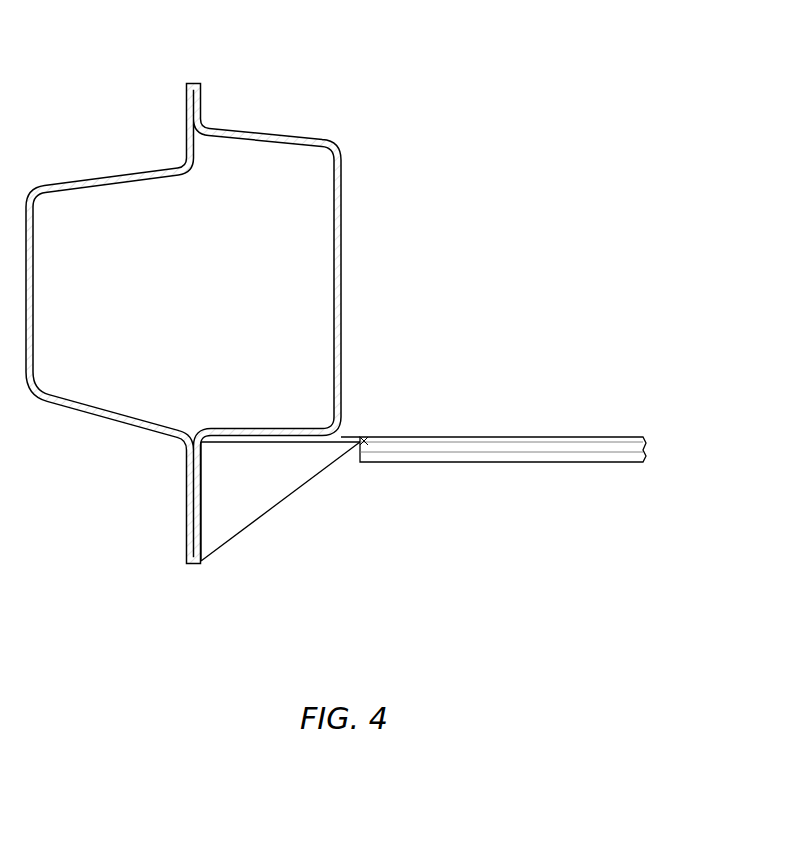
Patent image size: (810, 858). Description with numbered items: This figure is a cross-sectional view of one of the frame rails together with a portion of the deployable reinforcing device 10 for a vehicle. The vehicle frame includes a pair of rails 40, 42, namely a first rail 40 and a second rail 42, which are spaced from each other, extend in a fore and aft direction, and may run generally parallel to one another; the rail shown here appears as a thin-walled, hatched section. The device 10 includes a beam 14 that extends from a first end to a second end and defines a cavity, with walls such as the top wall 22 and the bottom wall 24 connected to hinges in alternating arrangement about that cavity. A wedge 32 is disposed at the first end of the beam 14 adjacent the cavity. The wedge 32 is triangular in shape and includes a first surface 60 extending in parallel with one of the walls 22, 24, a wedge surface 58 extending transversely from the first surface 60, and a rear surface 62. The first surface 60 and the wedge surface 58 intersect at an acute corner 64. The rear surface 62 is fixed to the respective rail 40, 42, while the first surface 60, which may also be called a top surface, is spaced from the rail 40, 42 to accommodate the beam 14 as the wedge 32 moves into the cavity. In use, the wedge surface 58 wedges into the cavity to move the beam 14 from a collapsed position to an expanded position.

The deployable reinforcing device 10 is at (338, 297).
The beam 14 is at (503, 440).
The top wall 22 is at (522, 437).
The bottom wall 24 is at (495, 462).
The first rail 40 is at (188, 292).
The second rail 42 is at (252, 86).
The wedge 32 is at (263, 473).
The wedge surface 58 is at (252, 527).
The first surface 60 is at (345, 437).
The rear surface 62 is at (190, 480).
The acute corner 64 is at (362, 441).